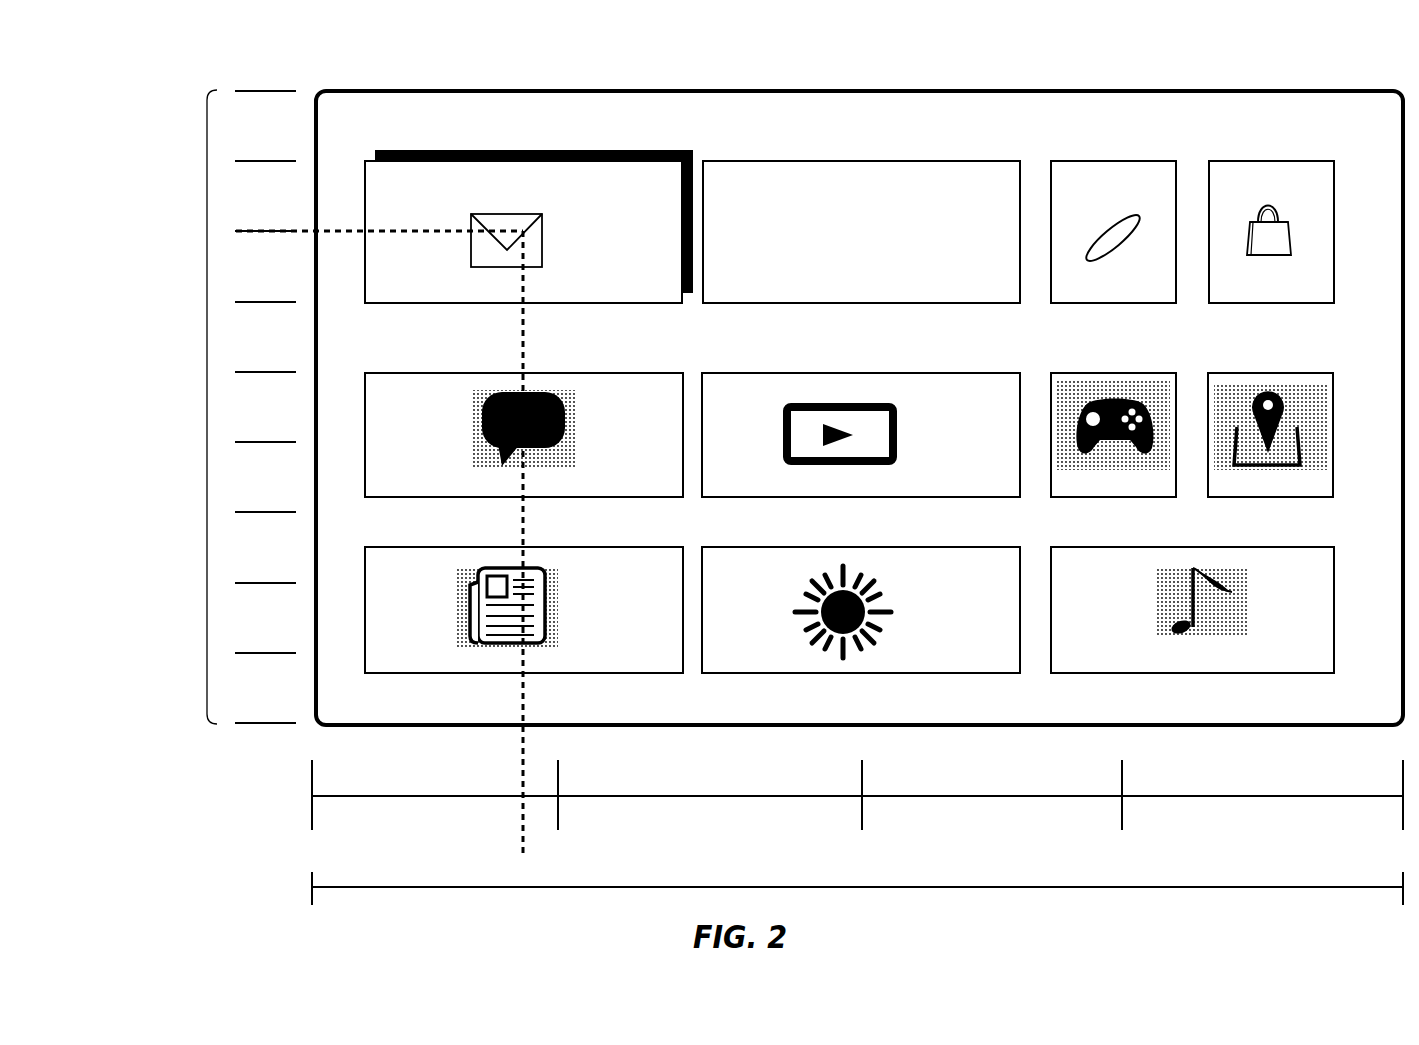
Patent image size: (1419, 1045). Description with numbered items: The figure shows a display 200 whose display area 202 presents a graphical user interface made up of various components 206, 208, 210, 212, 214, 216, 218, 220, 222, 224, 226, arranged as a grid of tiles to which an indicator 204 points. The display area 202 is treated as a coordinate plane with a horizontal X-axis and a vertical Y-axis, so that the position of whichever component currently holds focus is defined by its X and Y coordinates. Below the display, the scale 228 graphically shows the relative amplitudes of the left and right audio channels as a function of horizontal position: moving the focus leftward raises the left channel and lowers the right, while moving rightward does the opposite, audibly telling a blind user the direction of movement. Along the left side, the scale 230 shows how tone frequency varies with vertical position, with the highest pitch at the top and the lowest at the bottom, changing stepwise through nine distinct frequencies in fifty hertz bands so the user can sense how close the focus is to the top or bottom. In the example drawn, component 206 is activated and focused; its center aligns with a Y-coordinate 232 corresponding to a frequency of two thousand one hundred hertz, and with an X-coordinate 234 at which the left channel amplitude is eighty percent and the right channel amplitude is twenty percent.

The display 200 is at (188, 47).
The display area 202 is at (820, 91).
The tile grid 204 is at (604, 124).
The component 206 is at (466, 161).
The component 208 is at (788, 161).
The component 210 is at (1108, 161).
The component 212 is at (1267, 161).
The component 214 is at (598, 373).
The component 216 is at (950, 373).
The component 218 is at (1127, 373).
The component 220 is at (1283, 373).
The component 222 is at (597, 547).
The component 224 is at (879, 547).
The component 226 is at (1195, 547).
The scale 228 is at (312, 880).
The scale 230 is at (207, 412).
The Y-coordinate 232 is at (362, 232).
The X-coordinate 234 is at (522, 778).